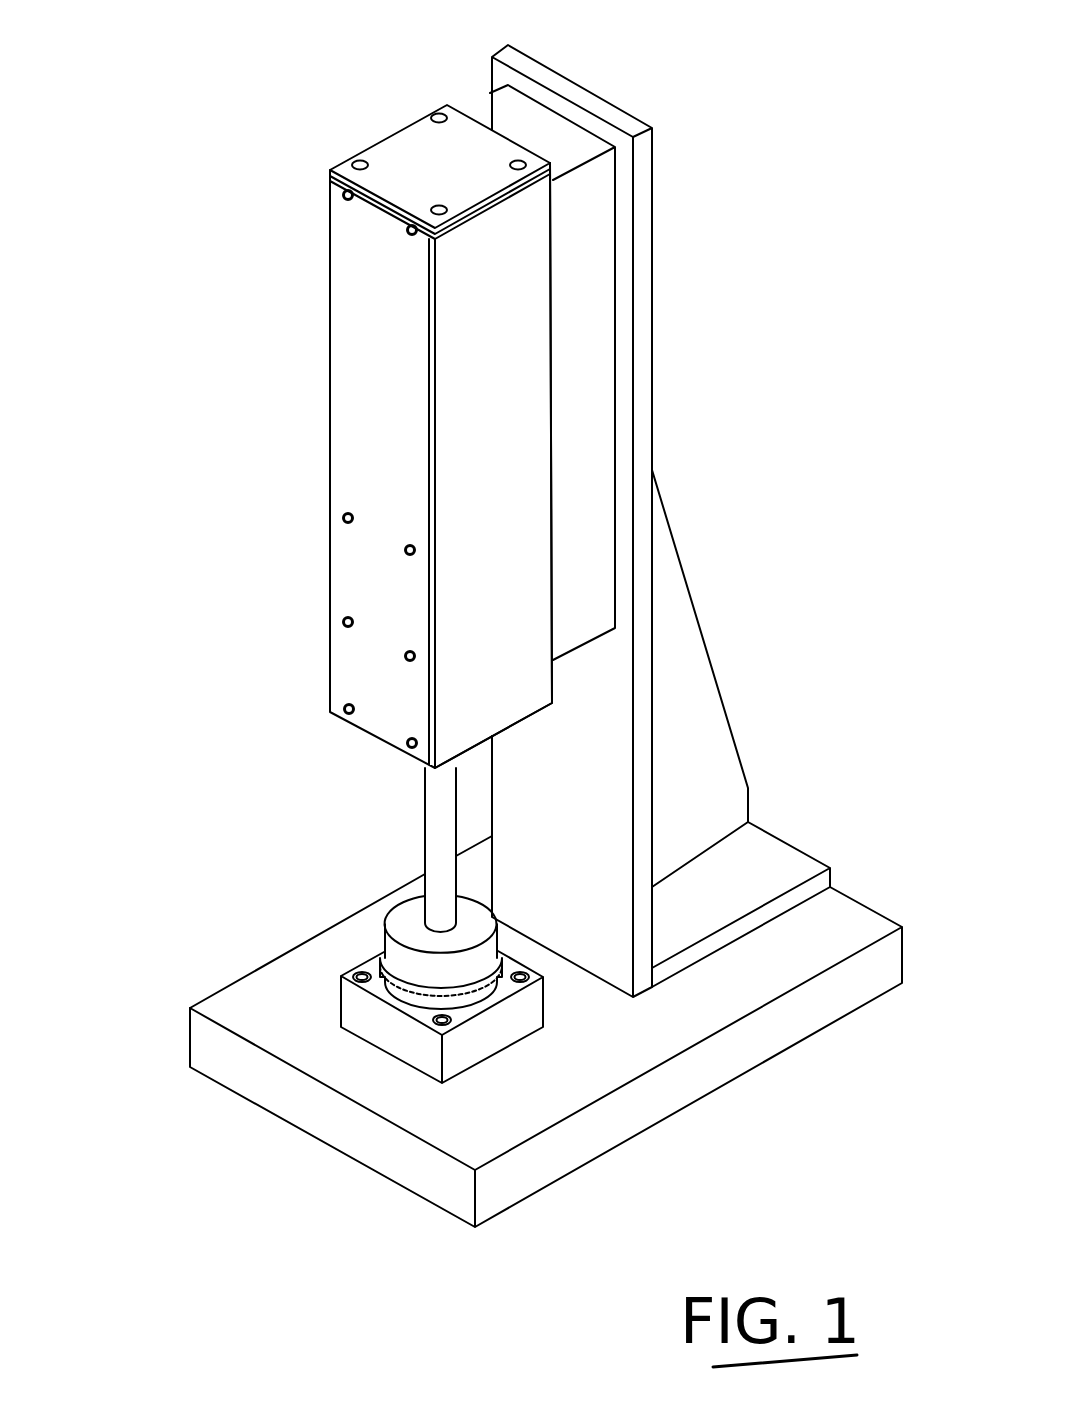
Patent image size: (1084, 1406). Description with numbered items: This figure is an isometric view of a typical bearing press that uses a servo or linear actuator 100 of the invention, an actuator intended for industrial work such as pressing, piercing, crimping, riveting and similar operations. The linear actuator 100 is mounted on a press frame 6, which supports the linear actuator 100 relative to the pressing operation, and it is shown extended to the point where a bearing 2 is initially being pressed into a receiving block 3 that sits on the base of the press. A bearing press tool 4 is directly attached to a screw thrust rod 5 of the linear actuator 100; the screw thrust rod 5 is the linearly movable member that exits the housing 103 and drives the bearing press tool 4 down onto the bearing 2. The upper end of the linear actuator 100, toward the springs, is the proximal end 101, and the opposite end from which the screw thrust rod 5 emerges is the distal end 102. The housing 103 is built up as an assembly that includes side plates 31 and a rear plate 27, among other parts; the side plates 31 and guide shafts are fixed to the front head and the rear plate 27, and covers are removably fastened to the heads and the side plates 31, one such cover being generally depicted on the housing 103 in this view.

The linear actuator 100 is at (401, 392).
The proximal end 101 is at (390, 159).
The rear plate 27 is at (438, 153).
The distal end 102 is at (316, 721).
The housing 103 is at (508, 313).
The side plates 31 is at (510, 452).
The press frame 6 is at (598, 732).
The screw thrust rod 5 is at (432, 807).
The bearing press tool 4 is at (405, 928).
The bearing 2 is at (418, 993).
The receiving block 3 is at (402, 1037).